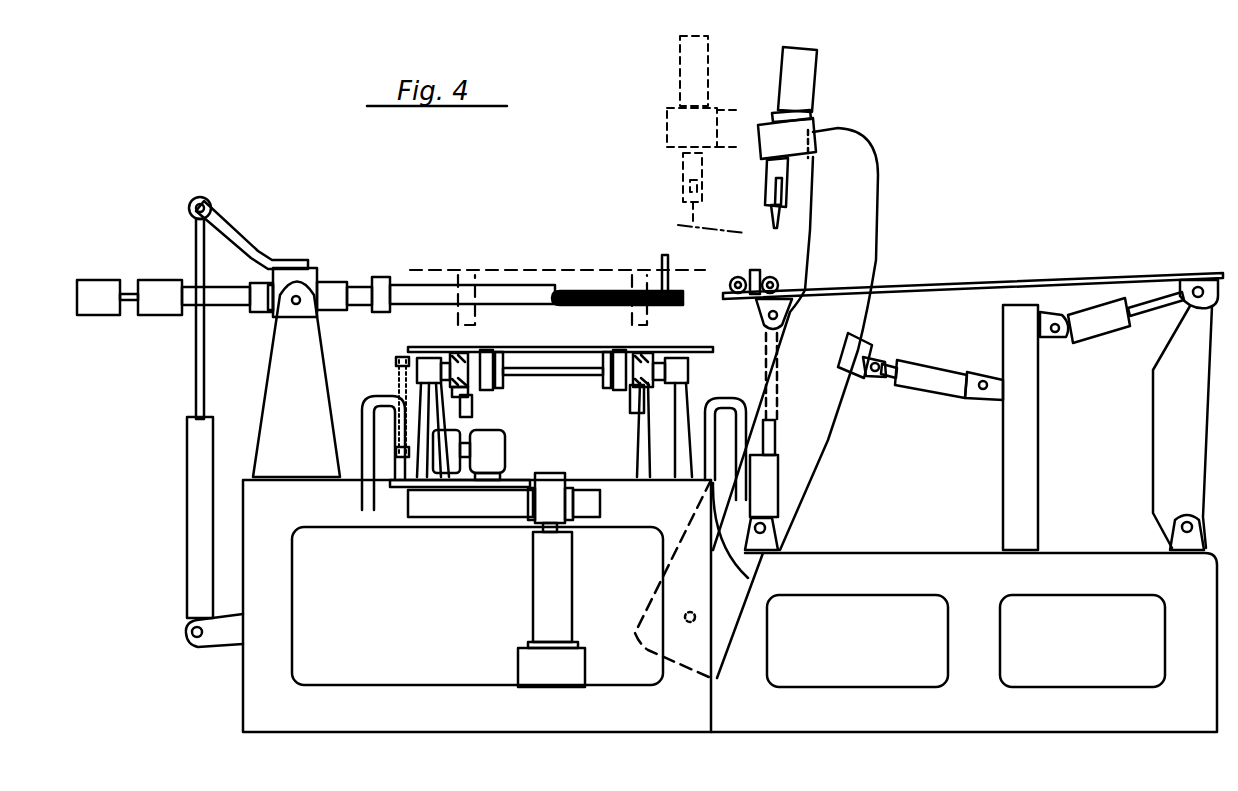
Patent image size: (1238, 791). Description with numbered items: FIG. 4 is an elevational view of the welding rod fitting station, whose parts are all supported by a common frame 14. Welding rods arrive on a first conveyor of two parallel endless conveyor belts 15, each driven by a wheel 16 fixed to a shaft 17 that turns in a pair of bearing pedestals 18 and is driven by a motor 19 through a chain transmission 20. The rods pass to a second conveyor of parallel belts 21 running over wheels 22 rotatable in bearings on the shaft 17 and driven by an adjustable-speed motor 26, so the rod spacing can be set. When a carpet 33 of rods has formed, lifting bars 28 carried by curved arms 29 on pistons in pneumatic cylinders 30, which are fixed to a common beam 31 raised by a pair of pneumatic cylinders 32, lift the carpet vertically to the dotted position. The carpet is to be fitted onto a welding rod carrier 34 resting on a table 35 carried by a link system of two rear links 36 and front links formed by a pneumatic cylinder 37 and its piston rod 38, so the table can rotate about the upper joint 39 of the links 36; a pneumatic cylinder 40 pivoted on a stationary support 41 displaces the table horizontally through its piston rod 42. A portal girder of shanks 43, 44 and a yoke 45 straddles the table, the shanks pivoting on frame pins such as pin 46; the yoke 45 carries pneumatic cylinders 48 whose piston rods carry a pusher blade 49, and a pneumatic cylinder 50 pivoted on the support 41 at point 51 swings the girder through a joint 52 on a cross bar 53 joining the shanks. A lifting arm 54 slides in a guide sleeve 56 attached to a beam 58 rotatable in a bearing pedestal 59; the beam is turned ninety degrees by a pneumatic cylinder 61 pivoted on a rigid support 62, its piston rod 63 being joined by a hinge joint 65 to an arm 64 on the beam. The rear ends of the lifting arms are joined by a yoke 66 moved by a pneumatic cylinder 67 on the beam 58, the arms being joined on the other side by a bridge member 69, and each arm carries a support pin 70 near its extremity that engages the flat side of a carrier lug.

The frame 14 is at (255, 706).
The conveyor belts 15 is at (457, 357).
The wheel 16 is at (490, 356).
The shaft 17 is at (550, 362).
The bearing pedestals 18 is at (420, 362).
The motor 19 is at (447, 452).
The chain transmission 20 is at (400, 384).
The conveyor belts 21 is at (607, 375).
The wheels 22 is at (620, 392).
The motor 26 is at (483, 450).
The lifting bars 28 is at (630, 395).
The curved arms 29 is at (362, 440).
The pneumatic cylinder 30 is at (486, 505).
The common beam 31 is at (556, 486).
The pneumatic cylinders 32 is at (536, 588).
The carpet of welding rods 33 is at (520, 268).
The welding rod carrier 34 is at (762, 277).
The table 35 is at (970, 282).
The rear links 36 is at (1153, 420).
The pneumatic cylinder 37 is at (770, 478).
The piston rod 38 is at (776, 440).
The upper joint 39 is at (1198, 285).
The pneumatic cylinder 40 is at (1100, 325).
The stationary support 41 is at (1002, 330).
The piston rod 42 is at (1148, 298).
The shank 43 is at (876, 170).
The shank 44 is at (780, 508).
The yoke 45 is at (815, 138).
The pin 46 is at (684, 617).
The pneumatic cylinders 48 is at (817, 72).
The pusher blade 49 is at (787, 240).
The pneumatic cylinder 50 is at (930, 385).
The point 51 is at (978, 398).
The joint 52 is at (880, 358).
The cross bar 53 is at (842, 375).
The lifting arm 54 is at (432, 284).
The guide sleeve 56 is at (332, 292).
The beam 58 is at (293, 272).
The bearing pedestal 59 is at (283, 392).
The pneumatic cylinder 61 is at (192, 438).
The rigid support 62 is at (213, 633).
The piston rod 63 is at (195, 357).
The arm 64 is at (232, 225).
The hinge joint 65 is at (203, 197).
The yoke 66 is at (128, 283).
The pneumatic cylinder 67 is at (250, 312).
The bridge member 69 is at (380, 278).
The support pin 70 is at (662, 266).